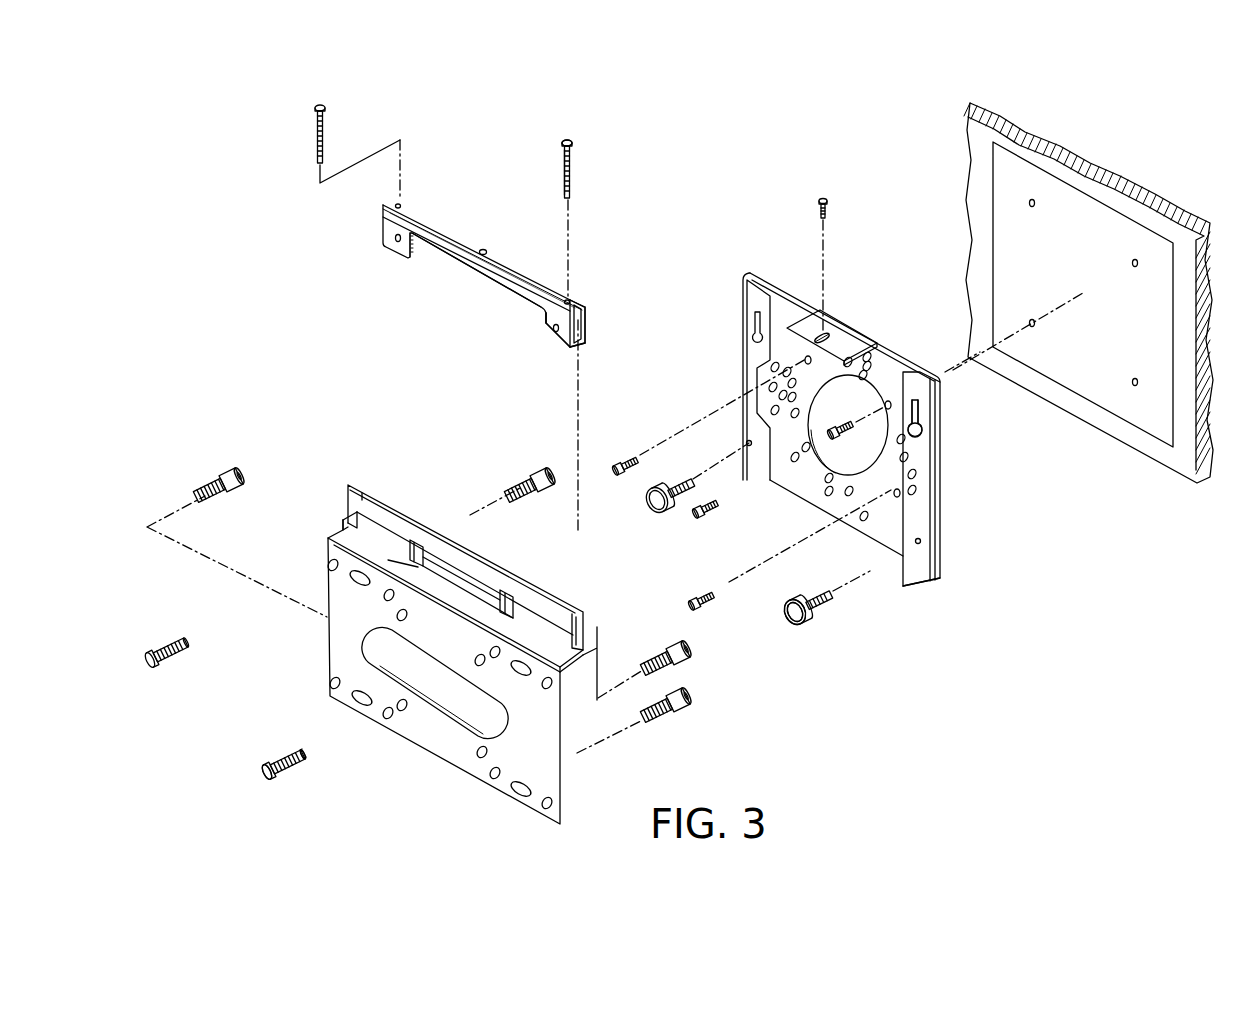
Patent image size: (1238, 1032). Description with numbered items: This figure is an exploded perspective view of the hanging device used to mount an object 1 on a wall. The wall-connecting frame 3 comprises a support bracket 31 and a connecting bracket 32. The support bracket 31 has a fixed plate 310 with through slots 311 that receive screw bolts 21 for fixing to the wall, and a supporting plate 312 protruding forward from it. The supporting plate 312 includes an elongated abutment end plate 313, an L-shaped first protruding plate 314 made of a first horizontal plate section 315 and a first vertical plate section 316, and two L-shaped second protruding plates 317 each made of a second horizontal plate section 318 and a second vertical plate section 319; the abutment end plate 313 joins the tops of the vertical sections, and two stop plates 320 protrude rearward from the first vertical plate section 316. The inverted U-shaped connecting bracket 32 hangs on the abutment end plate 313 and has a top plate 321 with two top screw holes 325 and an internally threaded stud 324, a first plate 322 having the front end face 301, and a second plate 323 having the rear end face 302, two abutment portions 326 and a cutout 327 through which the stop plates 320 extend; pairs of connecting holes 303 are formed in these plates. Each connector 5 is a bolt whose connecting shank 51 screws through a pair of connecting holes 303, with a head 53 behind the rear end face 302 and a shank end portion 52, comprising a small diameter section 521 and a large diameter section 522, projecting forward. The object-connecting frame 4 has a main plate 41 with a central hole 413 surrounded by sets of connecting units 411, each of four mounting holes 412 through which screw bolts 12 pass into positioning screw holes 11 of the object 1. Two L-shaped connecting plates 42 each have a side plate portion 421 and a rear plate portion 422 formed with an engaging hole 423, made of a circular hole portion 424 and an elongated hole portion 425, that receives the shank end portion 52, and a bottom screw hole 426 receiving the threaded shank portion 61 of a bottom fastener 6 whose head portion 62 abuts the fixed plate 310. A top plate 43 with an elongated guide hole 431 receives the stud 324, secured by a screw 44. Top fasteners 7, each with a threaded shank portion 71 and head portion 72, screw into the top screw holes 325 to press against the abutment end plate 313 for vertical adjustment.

The object 1 is at (1120, 175).
The positioning screw holes 11 is at (1034, 327).
The wall-connecting frame 3 is at (286, 390).
The support bracket 31 is at (327, 468).
The fixed plate 310 is at (440, 750).
The through slots 311 is at (350, 577).
The supporting plate 312 is at (550, 590).
The abutment end plate 313 is at (356, 487).
The first protruding plate 314 is at (518, 617).
The first horizontal plate section 315 is at (432, 580).
The first vertical plate section 316 is at (470, 578).
The second protruding plates 317 is at (338, 513).
The second horizontal plate section 318 is at (341, 524).
The second vertical plate section 319 is at (345, 502).
The stop plates 320 is at (414, 538).
The connecting bracket 32 is at (375, 221).
The top plate 321 is at (456, 236).
The first plate 322 is at (584, 337).
The second plate 323 is at (582, 342).
The internally threaded stud 324 is at (487, 250).
The top screw holes 325 is at (402, 203).
The abutment portions 326 is at (393, 241).
The cutout 327 is at (492, 288).
The front end face 301 is at (590, 316).
The rear end face 302 is at (563, 348).
The connecting holes 303 is at (399, 247).
The object-connecting frame 4 is at (912, 332).
The main plate 41 is at (920, 358).
The connecting units 411 is at (902, 495).
The mounting holes 412 is at (803, 355).
The central hole 413 is at (857, 465).
The connecting plates 42 is at (740, 382).
The side plate portion 421 is at (932, 490).
The rear plate portion 422 is at (925, 568).
The engaging hole 423 is at (752, 325).
The circular hole portion 424 is at (921, 434).
The elongated hole portion 425 is at (919, 422).
The bottom screw hole 426 is at (745, 444).
The top plate 43 is at (840, 320).
The elongated guide hole 431 is at (818, 333).
The screw 44 is at (829, 201).
The connectors 5 is at (257, 701).
The connecting shank 51 is at (274, 757).
The shank end portion 52 is at (303, 766).
The head 53 is at (258, 773).
The small diameter section 521 is at (300, 750).
The large diameter section 522 is at (306, 758).
The bottom fasteners 6 is at (741, 576).
The threaded shank portion 61 is at (820, 606).
The head portion 62 is at (783, 616).
The top fasteners 7 is at (330, 118).
The threaded shank portion 71 is at (572, 190).
The head portion 72 is at (572, 144).
The screw bolts 12 is at (615, 480).
The screw bolts 21 is at (212, 476).